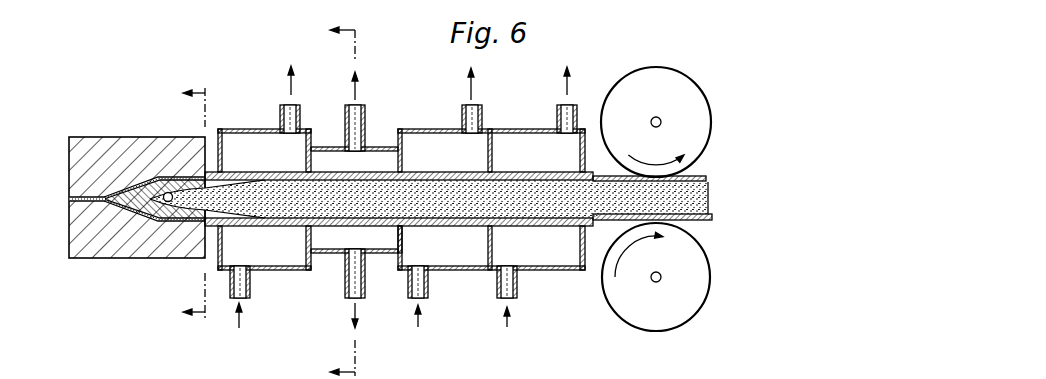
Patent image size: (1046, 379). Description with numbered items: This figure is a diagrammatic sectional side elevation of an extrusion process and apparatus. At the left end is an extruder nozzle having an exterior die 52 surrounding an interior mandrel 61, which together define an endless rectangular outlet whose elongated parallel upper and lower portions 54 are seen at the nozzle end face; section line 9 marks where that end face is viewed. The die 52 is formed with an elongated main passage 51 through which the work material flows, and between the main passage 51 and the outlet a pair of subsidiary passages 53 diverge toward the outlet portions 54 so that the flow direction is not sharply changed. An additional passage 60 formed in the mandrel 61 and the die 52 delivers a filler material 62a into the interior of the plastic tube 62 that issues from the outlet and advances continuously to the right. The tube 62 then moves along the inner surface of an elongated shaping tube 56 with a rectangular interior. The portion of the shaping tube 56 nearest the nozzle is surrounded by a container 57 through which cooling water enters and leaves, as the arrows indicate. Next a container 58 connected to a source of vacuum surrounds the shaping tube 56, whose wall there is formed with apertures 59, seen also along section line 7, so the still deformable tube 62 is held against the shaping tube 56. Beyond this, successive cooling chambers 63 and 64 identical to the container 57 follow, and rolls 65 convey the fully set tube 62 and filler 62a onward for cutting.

The section line 7- 7 is at (331, 200).
The section line 9- 9 is at (194, 204).
The main passage 51 is at (80, 197).
The die 52 is at (92, 247).
The subsidiary passages 53 is at (150, 178).
The upper and lower outlet portions 54 is at (180, 176).
The shaping tube 56 is at (232, 173).
The cooling container 57 is at (263, 138).
The vacuum container 58 is at (327, 157).
The apertures 59 is at (346, 230).
The additional passage 60 is at (156, 204).
The mandrel 61 is at (130, 188).
The plastic tube 62 is at (532, 228).
The filler material 62a is at (607, 212).
The cooling chamber 63 is at (425, 142).
The cooling chamber 64 is at (523, 140).
The rolls 65 is at (680, 88).